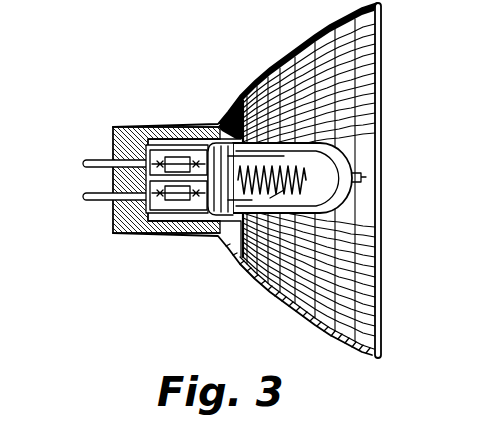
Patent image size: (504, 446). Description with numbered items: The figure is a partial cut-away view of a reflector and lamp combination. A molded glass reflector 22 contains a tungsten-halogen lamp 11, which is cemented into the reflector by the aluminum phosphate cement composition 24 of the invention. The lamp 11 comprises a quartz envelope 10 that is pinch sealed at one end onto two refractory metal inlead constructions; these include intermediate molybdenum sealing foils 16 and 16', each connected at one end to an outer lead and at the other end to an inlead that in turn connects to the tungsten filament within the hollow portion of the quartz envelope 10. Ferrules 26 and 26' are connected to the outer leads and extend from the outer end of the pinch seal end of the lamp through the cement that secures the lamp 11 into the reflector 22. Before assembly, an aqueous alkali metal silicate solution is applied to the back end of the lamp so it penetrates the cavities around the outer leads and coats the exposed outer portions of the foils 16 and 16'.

The quartz envelope 10 is at (345, 210).
The tungsten-halogen lamp 11 is at (348, 155).
The molybdenum sealing foil 16 is at (177, 147).
The molybdenum sealing foil 16' is at (170, 233).
The molded glass reflector 22 is at (270, 68).
The aluminum phosphate cement composition 24 is at (113, 180).
The ferrule 26 is at (112, 132).
The ferrule 26' is at (86, 220).